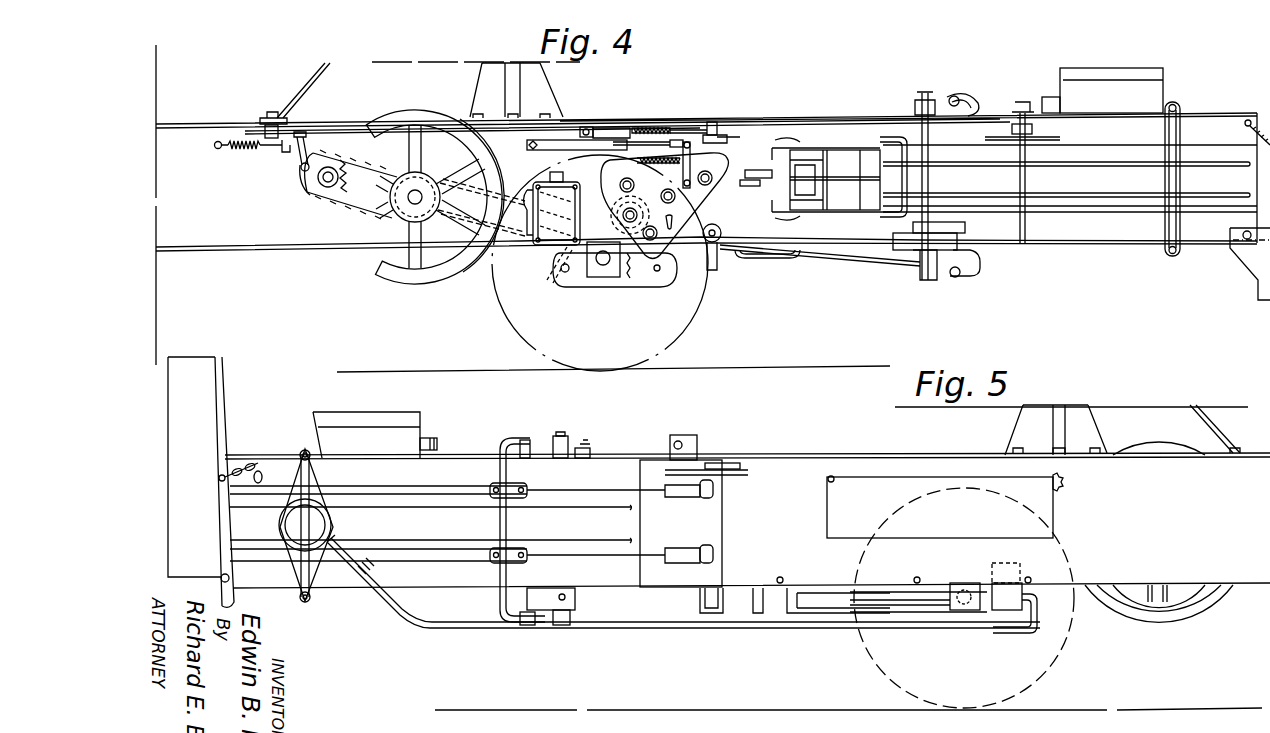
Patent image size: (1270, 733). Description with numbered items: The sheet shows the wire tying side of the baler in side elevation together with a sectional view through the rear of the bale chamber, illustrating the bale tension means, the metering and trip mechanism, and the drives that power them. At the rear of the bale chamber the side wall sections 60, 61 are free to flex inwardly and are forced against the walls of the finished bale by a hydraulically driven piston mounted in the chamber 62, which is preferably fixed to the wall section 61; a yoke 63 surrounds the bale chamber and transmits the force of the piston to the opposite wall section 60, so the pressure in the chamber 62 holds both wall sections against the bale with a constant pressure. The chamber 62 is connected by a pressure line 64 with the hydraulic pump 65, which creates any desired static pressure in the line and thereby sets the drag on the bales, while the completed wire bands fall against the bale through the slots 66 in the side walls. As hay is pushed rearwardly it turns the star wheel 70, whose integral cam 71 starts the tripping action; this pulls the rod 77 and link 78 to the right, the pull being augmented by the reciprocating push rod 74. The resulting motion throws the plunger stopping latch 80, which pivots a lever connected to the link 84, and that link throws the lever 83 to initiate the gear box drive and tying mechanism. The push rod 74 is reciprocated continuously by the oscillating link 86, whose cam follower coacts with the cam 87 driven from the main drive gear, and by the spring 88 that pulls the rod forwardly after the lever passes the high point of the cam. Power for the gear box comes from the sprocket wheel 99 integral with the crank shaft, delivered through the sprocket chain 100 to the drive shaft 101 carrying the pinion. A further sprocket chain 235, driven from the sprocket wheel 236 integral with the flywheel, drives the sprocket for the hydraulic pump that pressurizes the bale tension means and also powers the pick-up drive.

In FIG. 4, the wall section 60 is at (1205, 183).
In FIG. 5, the wall section 60 is at (201, 482).
In FIG. 5, the wall section 61 is at (410, 525).
In FIG. 5, the chamber 62 is at (300, 523).
In FIG. 4, the yoke 63 is at (1165, 173).
In FIG. 4, the pressure line 64 is at (527, 225).
In FIG. 5, the pressure line 64 is at (408, 617).
In FIG. 4, the hydraulic pump 65 is at (543, 237).
In FIG. 5, the hydraulic pump 65 is at (1007, 600).
In FIG. 4, the slots 66 is at (1012, 147).
In FIG. 5, the slots 66 is at (403, 490).
In FIG. 4, the star wheel 70 is at (1057, 138).
In FIG. 4, the cam 71 is at (1037, 118).
In FIG. 4, the push rod 74 is at (332, 122).
In FIG. 4, the rod 77 is at (747, 130).
In FIG. 4, the link 78 is at (692, 108).
In FIG. 4, the plunger stopping latch 80 is at (630, 115).
In FIG. 4, the lever 83 is at (692, 163).
In FIG. 4, the link 84 is at (993, 117).
In FIG. 4, the link 86 is at (298, 160).
In FIG. 4, the cam 87 is at (312, 188).
In FIG. 4, the spring 88 is at (238, 150).
In FIG. 4, the sprocket wheel 99 is at (343, 192).
In FIG. 4, the sprocket chain 100 is at (367, 143).
In FIG. 4, the drive shaft 101 is at (633, 210).
In FIG. 4, the sprocket chain 235 is at (430, 283).
In FIG. 4, the sprocket wheel 236 is at (570, 250).